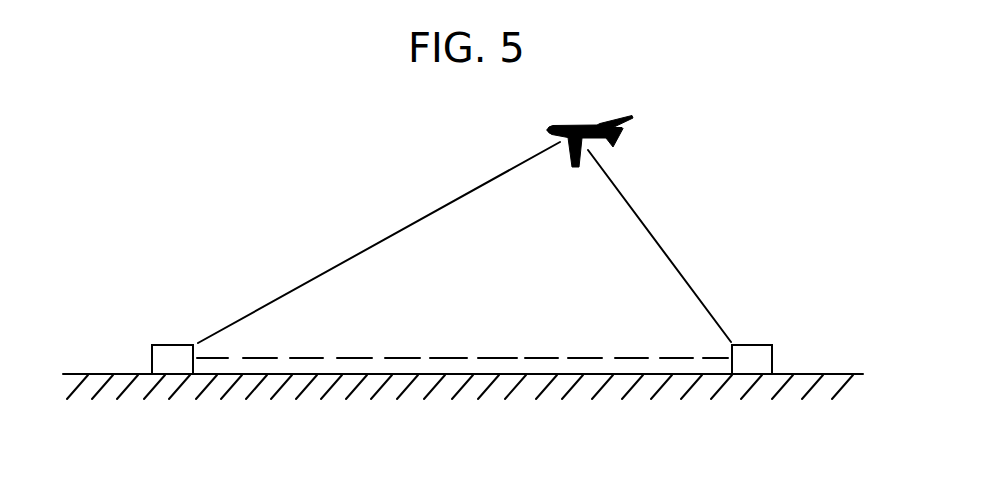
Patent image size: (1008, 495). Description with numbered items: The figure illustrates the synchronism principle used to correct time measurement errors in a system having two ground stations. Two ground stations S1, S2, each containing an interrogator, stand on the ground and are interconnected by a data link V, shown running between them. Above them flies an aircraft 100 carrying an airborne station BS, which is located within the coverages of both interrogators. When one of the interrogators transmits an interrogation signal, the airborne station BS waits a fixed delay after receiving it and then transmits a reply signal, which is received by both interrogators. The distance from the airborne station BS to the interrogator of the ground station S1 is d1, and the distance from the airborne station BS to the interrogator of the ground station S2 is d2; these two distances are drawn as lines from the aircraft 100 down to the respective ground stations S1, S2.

The airborne station BS is at (580, 126).
The aircraft 100 is at (570, 157).
The ground station S1 is at (175, 350).
The ground station S2 is at (750, 350).
The distance from airborne station to interrogator of ground station S1 d1 is at (393, 233).
The distance from airborne station to interrogator of ground station S2 d2 is at (643, 223).
The data link V is at (457, 357).